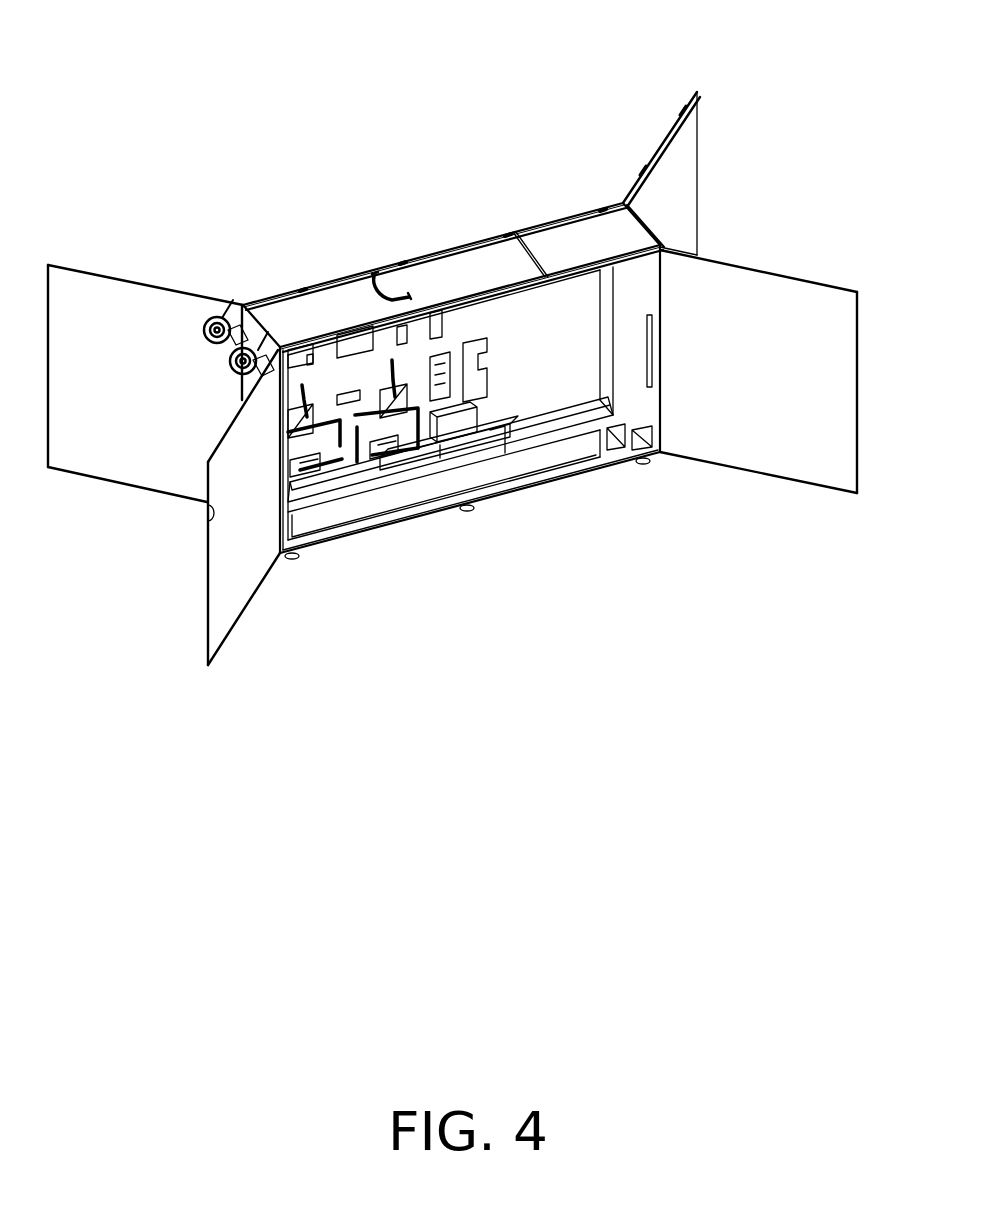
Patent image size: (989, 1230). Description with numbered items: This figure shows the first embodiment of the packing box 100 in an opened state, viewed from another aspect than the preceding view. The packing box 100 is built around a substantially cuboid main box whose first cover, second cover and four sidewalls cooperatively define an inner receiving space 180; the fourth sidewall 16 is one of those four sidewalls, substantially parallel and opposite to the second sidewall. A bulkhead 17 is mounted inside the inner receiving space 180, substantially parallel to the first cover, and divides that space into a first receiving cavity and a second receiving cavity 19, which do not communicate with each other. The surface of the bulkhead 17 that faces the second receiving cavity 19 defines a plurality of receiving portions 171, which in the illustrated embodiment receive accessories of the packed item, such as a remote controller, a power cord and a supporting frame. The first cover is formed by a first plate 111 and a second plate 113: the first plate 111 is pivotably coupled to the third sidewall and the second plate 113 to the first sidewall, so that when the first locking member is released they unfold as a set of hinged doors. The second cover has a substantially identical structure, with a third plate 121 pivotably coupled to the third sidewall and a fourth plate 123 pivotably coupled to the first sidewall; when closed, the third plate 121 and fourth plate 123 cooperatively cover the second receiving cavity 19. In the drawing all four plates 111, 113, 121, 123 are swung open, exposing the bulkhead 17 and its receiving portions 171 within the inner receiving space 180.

The packing box 100 is at (160, 60).
The first plate 111 is at (677, 173).
The second plate 113 is at (108, 320).
The third plate 121 is at (853, 452).
The fourth plate 123 is at (260, 587).
The fourth sidewall 16 is at (557, 245).
The bulkhead 17 is at (520, 320).
The receiving portions 171 is at (453, 415).
The inner receiving space 180 is at (532, 343).
The second receiving cavity 19 is at (525, 372).